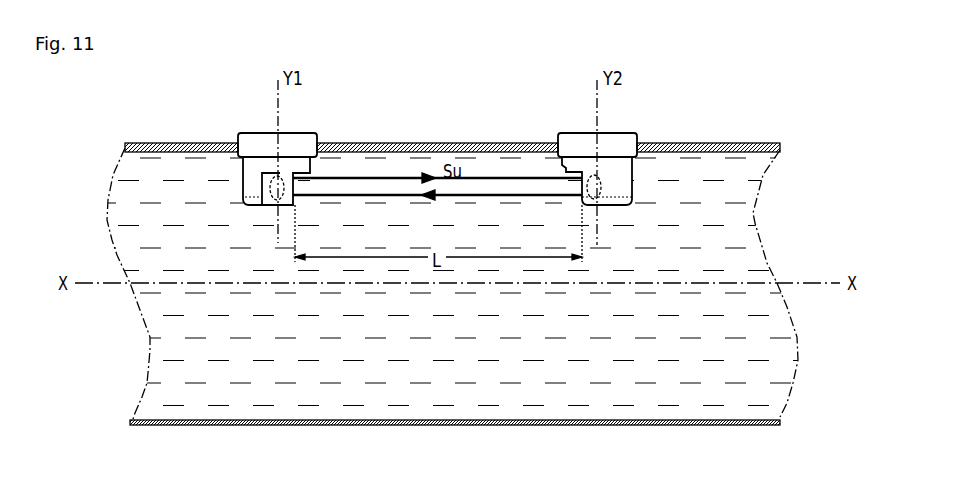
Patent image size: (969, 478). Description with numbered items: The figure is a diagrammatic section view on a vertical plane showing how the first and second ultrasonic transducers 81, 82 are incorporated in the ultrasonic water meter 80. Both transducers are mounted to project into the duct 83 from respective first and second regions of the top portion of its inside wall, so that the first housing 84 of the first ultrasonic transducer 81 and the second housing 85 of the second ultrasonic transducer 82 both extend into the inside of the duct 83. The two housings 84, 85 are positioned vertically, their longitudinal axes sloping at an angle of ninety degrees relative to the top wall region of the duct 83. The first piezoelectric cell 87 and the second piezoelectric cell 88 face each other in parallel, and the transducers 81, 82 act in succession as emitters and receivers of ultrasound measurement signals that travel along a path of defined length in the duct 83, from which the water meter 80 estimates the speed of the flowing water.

The ultrasonic water meter 80 is at (472, 130).
The first ultrasonic transducer 81 is at (262, 171).
The second ultrasonic transducer 82 is at (605, 160).
The duct 83 is at (402, 143).
The first housing 84 is at (245, 187).
The second housing 85 is at (623, 187).
The first piezoelectric cell 87 is at (267, 200).
The second piezoelectric cell 88 is at (577, 200).